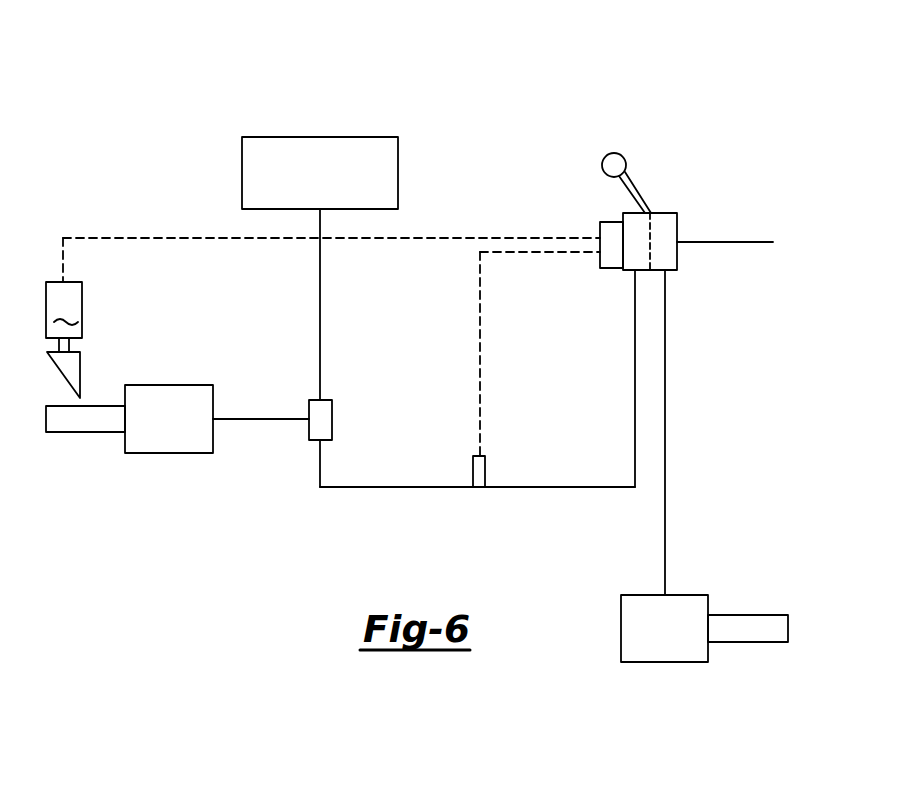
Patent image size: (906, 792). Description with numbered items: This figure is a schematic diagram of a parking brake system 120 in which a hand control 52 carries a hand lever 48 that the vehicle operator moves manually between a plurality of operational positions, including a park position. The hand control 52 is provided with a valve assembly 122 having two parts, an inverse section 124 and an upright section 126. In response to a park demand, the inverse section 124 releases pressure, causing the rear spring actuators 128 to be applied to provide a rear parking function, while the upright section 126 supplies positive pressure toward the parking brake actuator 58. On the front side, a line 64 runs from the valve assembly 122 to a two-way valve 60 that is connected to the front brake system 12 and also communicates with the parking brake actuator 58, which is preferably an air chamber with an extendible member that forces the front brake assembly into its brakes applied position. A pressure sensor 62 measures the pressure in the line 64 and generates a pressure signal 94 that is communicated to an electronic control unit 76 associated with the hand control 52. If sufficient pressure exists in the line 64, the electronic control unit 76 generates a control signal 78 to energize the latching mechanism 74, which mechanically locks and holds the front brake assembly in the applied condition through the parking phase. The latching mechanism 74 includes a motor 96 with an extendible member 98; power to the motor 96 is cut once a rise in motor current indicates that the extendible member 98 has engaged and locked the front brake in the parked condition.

The front brake system 12 is at (365, 137).
The parking brake system 120 is at (483, 103).
The hand control 52 is at (708, 193).
The hand lever 48 is at (614, 153).
The inverse section 124 is at (662, 225).
The electronic control unit 76 is at (600, 266).
The upright section 126 is at (633, 262).
The valve assembly 122 is at (682, 266).
The control signal 78 is at (128, 238).
The latching mechanism 74 is at (120, 297).
The motor 96 is at (64, 310).
The extendible member 98 is at (80, 377).
The parking brake actuator 58 is at (188, 385).
The two-way valve 60 is at (332, 420).
The pressure sensor 62 is at (485, 472).
The line 64 is at (385, 487).
The pressure signal 94 is at (478, 318).
The rear spring actuators 128 is at (689, 595).